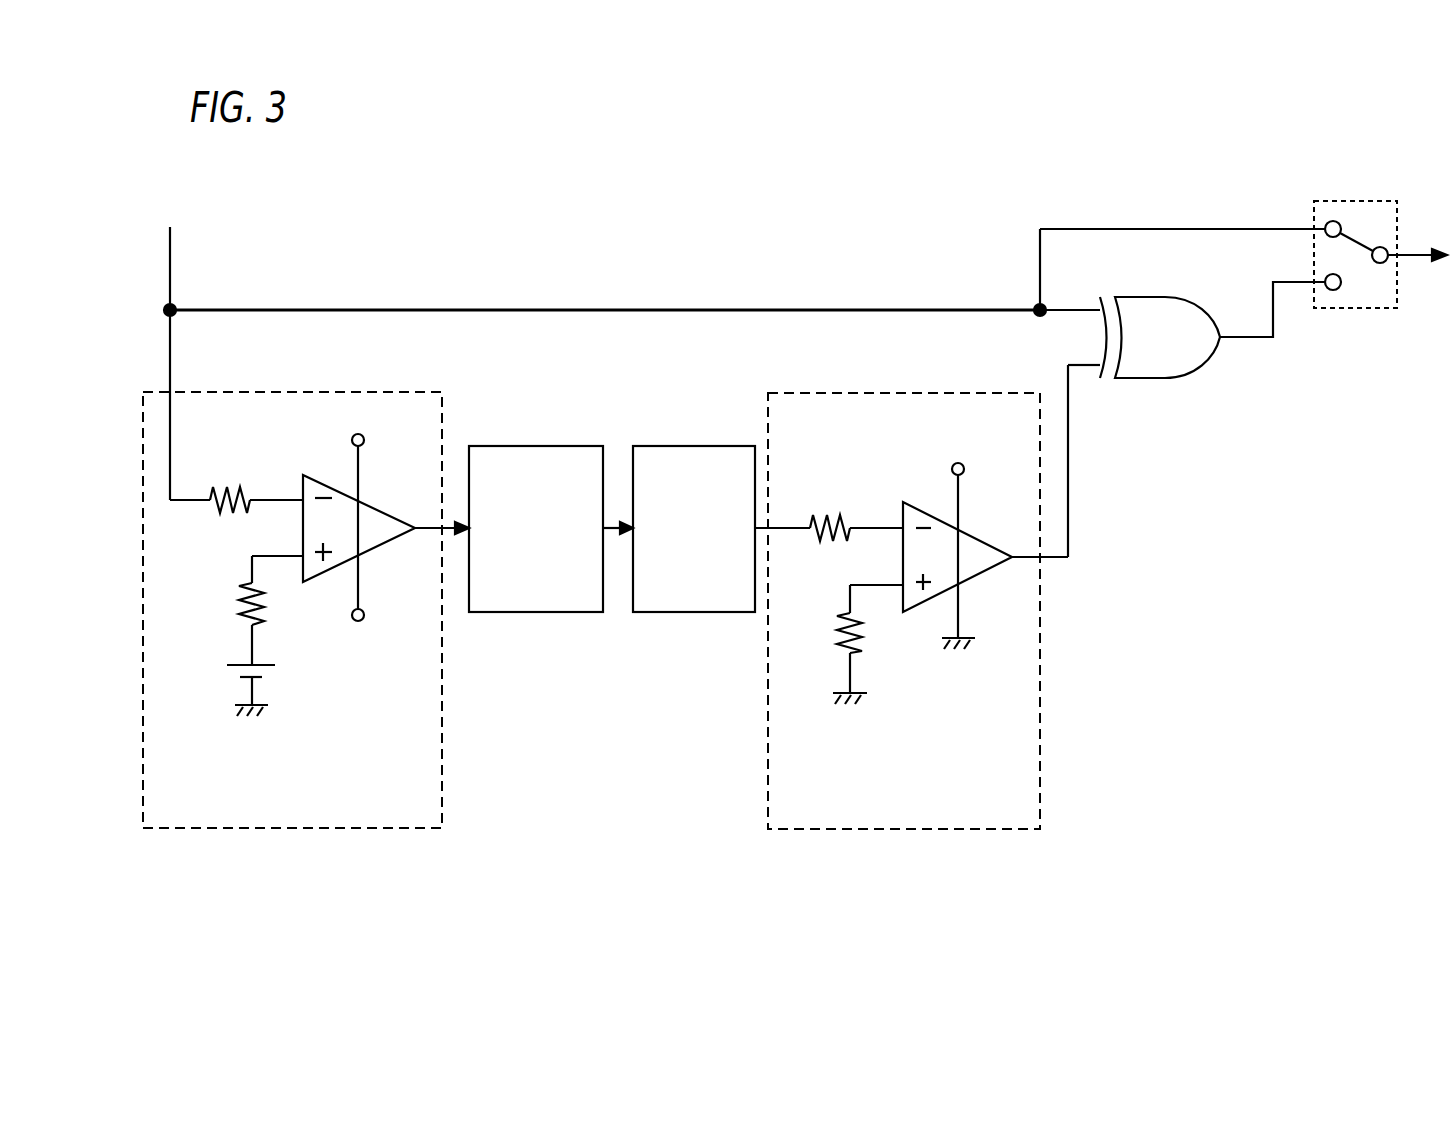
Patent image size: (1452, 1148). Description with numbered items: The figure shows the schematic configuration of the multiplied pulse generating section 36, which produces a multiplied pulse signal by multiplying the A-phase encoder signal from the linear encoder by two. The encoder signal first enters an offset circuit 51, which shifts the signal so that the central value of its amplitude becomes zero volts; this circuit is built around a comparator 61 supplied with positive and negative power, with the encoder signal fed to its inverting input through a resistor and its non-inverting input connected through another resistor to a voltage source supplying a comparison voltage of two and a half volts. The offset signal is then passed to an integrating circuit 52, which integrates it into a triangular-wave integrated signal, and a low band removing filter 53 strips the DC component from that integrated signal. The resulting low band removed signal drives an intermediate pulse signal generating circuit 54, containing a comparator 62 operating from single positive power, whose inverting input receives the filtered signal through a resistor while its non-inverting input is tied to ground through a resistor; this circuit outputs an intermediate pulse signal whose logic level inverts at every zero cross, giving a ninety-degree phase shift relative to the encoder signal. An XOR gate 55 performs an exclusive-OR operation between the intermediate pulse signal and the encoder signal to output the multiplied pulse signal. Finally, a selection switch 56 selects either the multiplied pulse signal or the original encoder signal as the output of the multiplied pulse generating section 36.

The multiplied pulse generating section 36 is at (1150, 150).
The offset circuit 51 is at (306, 659).
The integrating circuit 52 is at (540, 612).
The low band removing filter 53 is at (688, 612).
The intermediate pulse signal generating circuit 54 is at (904, 660).
The XOR gate 55 is at (1148, 378).
The selection switch 56 is at (1382, 308).
The comparator 61 is at (326, 484).
The comparator 62 is at (922, 512).